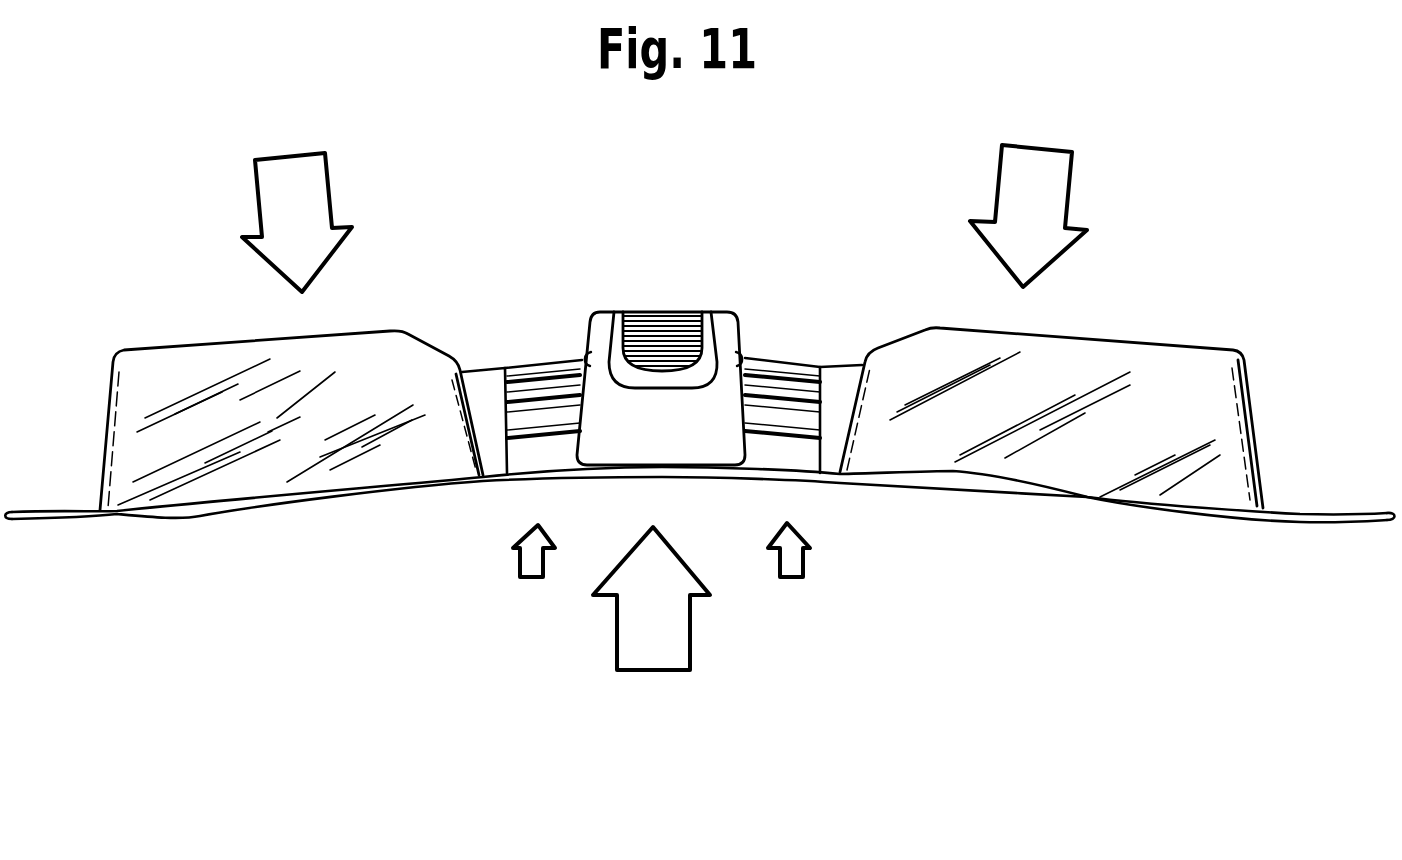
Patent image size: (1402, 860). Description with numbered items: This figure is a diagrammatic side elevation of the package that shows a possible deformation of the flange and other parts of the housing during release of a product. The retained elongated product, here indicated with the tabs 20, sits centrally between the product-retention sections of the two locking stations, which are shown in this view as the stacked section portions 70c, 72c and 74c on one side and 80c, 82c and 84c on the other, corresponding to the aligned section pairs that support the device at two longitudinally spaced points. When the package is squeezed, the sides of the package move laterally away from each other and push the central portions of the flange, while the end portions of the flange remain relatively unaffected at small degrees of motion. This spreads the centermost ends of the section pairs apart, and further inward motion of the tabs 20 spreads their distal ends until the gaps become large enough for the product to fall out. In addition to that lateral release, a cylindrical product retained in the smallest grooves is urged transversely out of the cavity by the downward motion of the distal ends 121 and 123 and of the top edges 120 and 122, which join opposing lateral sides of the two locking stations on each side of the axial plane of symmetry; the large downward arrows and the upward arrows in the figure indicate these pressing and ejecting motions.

The tabs 20 is at (671, 359).
The lower left support strip 70c is at (581, 423).
The upper left support strip 72c is at (583, 388).
The left retaining tab 74c is at (588, 352).
The lower right support strip 80c is at (744, 423).
The upper right support strip 82c is at (741, 388).
The right retaining tab 84c is at (738, 352).
The top edge 120 is at (493, 367).
The distal end 121 is at (462, 372).
The top edge 122 is at (845, 368).
The distal end 123 is at (862, 368).